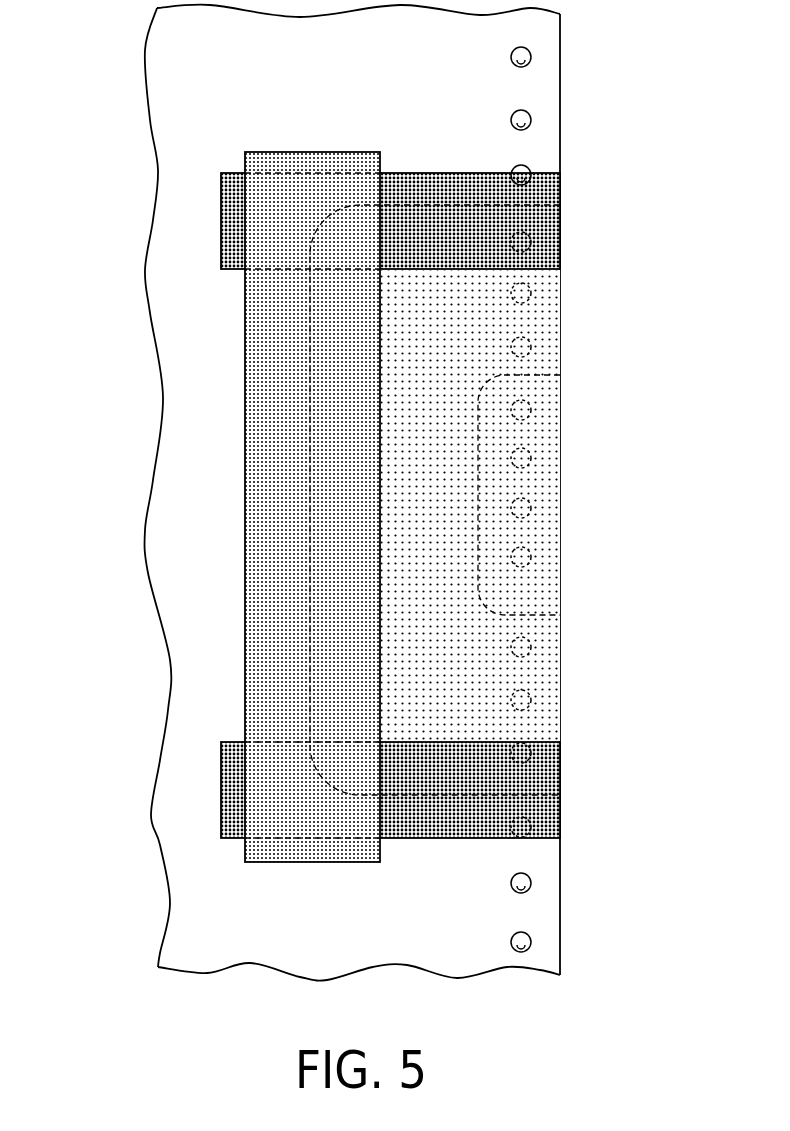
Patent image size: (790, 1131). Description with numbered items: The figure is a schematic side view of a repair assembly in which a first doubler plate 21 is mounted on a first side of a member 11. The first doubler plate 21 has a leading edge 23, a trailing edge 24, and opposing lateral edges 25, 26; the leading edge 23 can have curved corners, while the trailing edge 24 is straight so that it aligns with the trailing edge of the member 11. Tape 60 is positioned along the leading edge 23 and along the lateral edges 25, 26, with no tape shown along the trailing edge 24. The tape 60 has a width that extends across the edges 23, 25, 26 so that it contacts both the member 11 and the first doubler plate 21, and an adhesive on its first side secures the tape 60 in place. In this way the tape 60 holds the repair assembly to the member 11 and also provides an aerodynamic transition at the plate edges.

The member 11 is at (193, 52).
The first doubler plate 21 is at (473, 702).
The leading edge 23 is at (310, 463).
The trailing edge 24 is at (562, 640).
The lateral edge 25 is at (452, 795).
The lateral edge 26 is at (438, 193).
The tape 60 is at (232, 218).